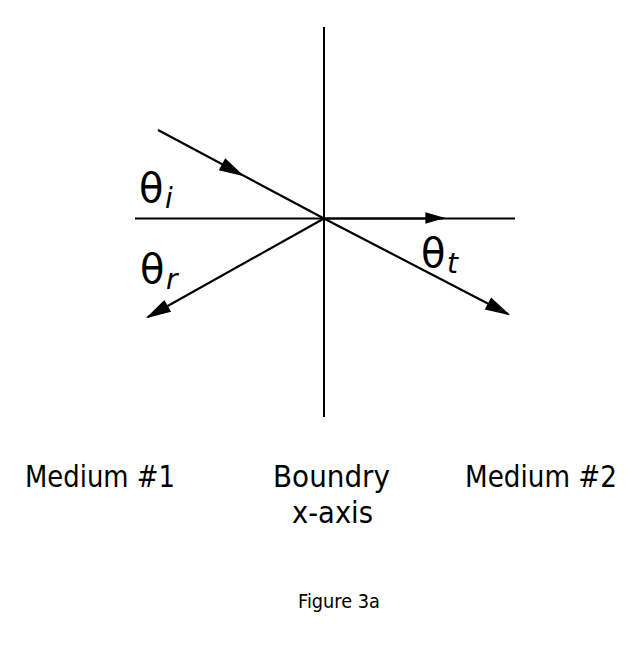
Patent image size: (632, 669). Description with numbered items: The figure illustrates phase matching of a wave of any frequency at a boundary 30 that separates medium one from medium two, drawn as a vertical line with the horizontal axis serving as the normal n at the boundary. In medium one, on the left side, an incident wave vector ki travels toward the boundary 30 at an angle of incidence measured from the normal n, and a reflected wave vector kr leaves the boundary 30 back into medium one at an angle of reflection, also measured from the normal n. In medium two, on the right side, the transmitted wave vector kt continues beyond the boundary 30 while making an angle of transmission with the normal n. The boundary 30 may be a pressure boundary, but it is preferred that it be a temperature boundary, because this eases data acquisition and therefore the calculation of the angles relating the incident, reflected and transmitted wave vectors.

The boundary 30 is at (324, 77).
The incident wave vector ki is at (241, 147).
The reflected wave vector kr is at (236, 268).
The transmitted wave vector kt is at (442, 278).
The normal n is at (383, 189).